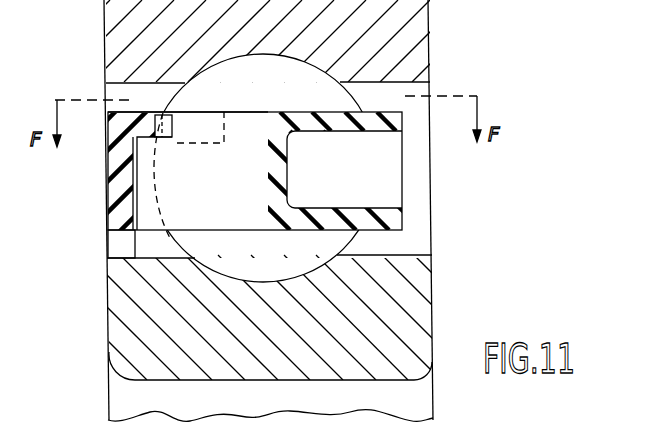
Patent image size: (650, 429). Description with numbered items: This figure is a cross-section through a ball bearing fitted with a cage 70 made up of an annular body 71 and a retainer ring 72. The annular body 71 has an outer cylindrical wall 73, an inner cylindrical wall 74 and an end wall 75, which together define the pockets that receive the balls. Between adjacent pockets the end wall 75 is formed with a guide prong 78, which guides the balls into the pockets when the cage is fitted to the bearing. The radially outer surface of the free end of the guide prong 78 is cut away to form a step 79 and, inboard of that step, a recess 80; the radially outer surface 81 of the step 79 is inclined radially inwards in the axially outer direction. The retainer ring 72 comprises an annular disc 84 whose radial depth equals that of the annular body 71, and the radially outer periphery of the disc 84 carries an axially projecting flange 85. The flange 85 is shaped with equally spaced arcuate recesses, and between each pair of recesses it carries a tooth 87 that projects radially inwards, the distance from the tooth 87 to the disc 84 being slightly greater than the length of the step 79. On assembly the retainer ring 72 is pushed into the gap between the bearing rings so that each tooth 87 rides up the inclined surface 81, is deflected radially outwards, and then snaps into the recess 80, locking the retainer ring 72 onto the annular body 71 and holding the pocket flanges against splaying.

The cage 70 is at (412, 191).
The annular body 71 is at (407, 196).
The retainer ring 72 is at (112, 208).
The outer cylindrical wall 73 is at (363, 118).
The inner cylindrical wall 74 is at (362, 220).
The end wall 75 is at (287, 188).
The guide prong 78 is at (232, 227).
The step 79 is at (148, 135).
The recess 80 is at (176, 140).
The radially outer surface 81 is at (140, 114).
The annular disc 84 is at (112, 233).
The axially projecting flange 85 is at (154, 114).
The tooth 87 is at (208, 116).